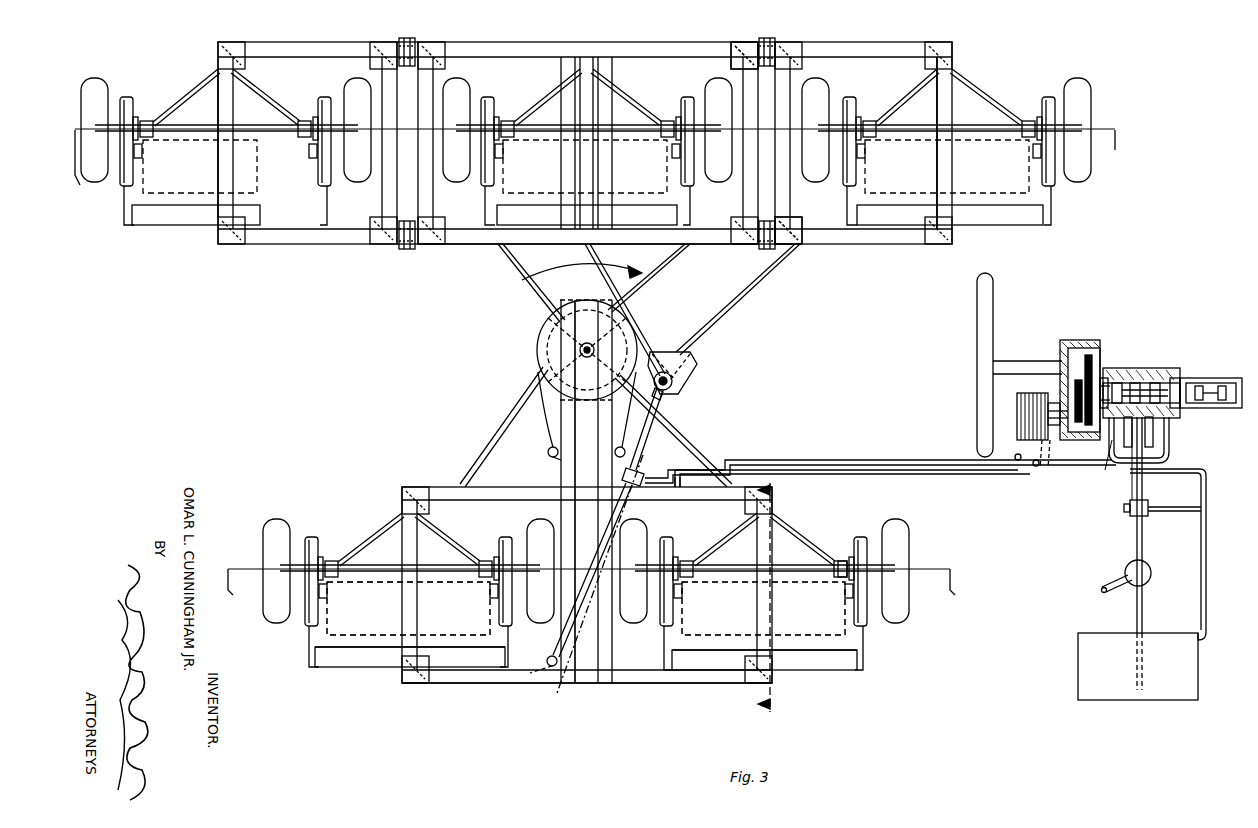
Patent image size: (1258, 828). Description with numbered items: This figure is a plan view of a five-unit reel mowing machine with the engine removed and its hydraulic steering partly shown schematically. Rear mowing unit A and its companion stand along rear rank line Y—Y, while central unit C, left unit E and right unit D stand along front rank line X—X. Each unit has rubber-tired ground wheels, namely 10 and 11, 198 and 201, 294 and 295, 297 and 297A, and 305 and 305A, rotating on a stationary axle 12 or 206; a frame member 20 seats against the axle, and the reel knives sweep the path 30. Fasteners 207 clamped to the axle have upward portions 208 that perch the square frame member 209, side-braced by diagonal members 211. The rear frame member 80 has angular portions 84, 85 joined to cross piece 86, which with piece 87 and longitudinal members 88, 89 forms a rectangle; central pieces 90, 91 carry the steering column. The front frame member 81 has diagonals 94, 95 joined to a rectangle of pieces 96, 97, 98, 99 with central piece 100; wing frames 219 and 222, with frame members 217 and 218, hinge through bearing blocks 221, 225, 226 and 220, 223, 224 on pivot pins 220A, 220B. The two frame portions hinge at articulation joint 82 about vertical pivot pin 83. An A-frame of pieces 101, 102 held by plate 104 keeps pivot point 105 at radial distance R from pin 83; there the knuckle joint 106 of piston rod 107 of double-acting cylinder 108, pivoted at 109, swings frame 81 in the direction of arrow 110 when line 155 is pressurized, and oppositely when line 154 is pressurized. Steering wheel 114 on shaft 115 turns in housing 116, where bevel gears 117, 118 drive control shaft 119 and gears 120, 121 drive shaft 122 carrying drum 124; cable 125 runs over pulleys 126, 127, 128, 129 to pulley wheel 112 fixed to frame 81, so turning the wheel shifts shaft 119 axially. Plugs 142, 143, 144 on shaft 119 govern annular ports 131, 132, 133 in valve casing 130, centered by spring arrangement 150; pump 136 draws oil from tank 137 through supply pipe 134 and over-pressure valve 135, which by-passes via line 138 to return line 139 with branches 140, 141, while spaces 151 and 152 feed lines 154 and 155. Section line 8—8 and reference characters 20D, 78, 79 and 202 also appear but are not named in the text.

The section line 8- 8 is at (772, 608).
The ground wheel 10 is at (272, 518).
The ground wheel 11 is at (530, 535).
The axle 12 is at (305, 555).
The frame member 20 is at (310, 535).
The bracket foot 20D is at (312, 668).
The path of movement of the rotary reel 30 is at (430, 635).
The tray top edge 78 is at (493, 656).
The tray 79 is at (378, 668).
The rear frame member 80 is at (465, 474).
The front main frame member 81 is at (520, 283).
The articulation joint 82 is at (581, 350).
The vertical pivot pin 83 is at (570, 342).
The angularly disposed portion 84 is at (500, 440).
The angularly disposed portion 85 is at (692, 462).
The cross piece 86 is at (505, 495).
The frame piece 87 is at (500, 684).
The longitudinal frame member 88 is at (372, 612).
The longitudinal frame member 89 is at (768, 625).
The central frame piece 90 is at (561, 484).
The central frame piece 91 is at (598, 445).
The diagonal piece 94 is at (503, 256).
The diagonal piece 95 is at (658, 268).
The transverse frame member 96 is at (458, 246).
The frame piece 97 is at (428, 203).
The frame piece 98 is at (632, 50).
The frame piece 99 is at (752, 180).
The central frame piece 100 is at (593, 172).
The A-frame piece 101 is at (630, 318).
The A-frame piece 102 is at (720, 300).
The plate 104 is at (690, 366).
The pivot point 105 is at (673, 382).
The knuckle joint 106 is at (662, 394).
The hydraulic piston rod 107 is at (655, 408).
The double acting hydraulic cylinder 108 is at (596, 618).
The pivot 109 is at (553, 668).
The arrow 110 is at (582, 273).
The pulley wheel 112 is at (537, 355).
The steering wheel 114 is at (992, 288).
The shaft 115 is at (1005, 360).
The housing 116 is at (1068, 340).
The gear 117 is at (1090, 354).
The gear 118 is at (1080, 424).
The hydraulic control shaft 119 is at (1105, 376).
The gear 120 is at (1056, 390).
The gear 121 is at (1070, 440).
The shaft 122 is at (1047, 470).
The drum 124 is at (1017, 400).
The steel cable 125 is at (912, 466).
The pulley 126 is at (1015, 460).
The pulley 127 is at (1033, 466).
The pulley 128 is at (629, 414).
The pulley 129 is at (541, 416).
The valve casing portion 130 is at (1160, 368).
The annular port 131 is at (1178, 370).
The annular port 132 is at (1137, 382).
The annular port 133 is at (1120, 382).
The pressure supply pipe 134 is at (1143, 493).
The over-pressure valve 135 is at (1130, 512).
The pressure supply pump 136 is at (1150, 568).
The tank 137 is at (1156, 630).
The by-pass line 138 is at (1180, 512).
The return line 139 is at (1208, 545).
The branch 140 is at (1170, 452).
The branch 141 is at (1108, 462).
The plug 142 is at (1155, 382).
The plug 143 is at (1175, 412).
The plug 144 is at (1108, 455).
The balanced spring arrangement 150 is at (1215, 378).
The space 151 is at (1168, 422).
The space 152 is at (1128, 450).
The line 154 is at (678, 530).
The line 155 is at (722, 462).
The ground wheel 198 is at (905, 566).
The ground wheel 201 is at (640, 535).
The roller 202 is at (720, 640).
The axle 206 is at (840, 582).
The fastener 207 is at (838, 562).
The upwardly extending portion 208 is at (333, 578).
The frame member of square section 209 is at (430, 564).
The diagonal member 211 is at (370, 528).
The frame member 217 is at (222, 205).
The right-hand frame member 218 is at (950, 82).
The wing frame 219 is at (276, 246).
The bearing block 220 is at (772, 52).
The pivot pin 220A is at (762, 250).
The pivot pin 220B is at (762, 50).
The bearing block 221 is at (403, 38).
The wing frame 222 is at (862, 246).
The bearing block 223 is at (790, 217).
The bearing block 224 is at (755, 63).
The bearing block 225 is at (400, 224).
The bearing block 226 is at (415, 58).
The ground wheel 294 is at (462, 92).
The ground wheel 295 is at (712, 95).
The ground wheel 297 is at (357, 90).
The ground wheel 297A is at (98, 90).
The ground wheel 305 is at (820, 92).
The ground wheel 305A is at (1082, 176).
The mowing unit A is at (313, 543).
The central mowing unit C is at (684, 113).
The mowing unit D is at (1052, 183).
The mowing unit E is at (130, 103).
The radial distance R is at (660, 381).
The transverse rank line X is at (598, 164).
The rear rank line Y is at (596, 589).